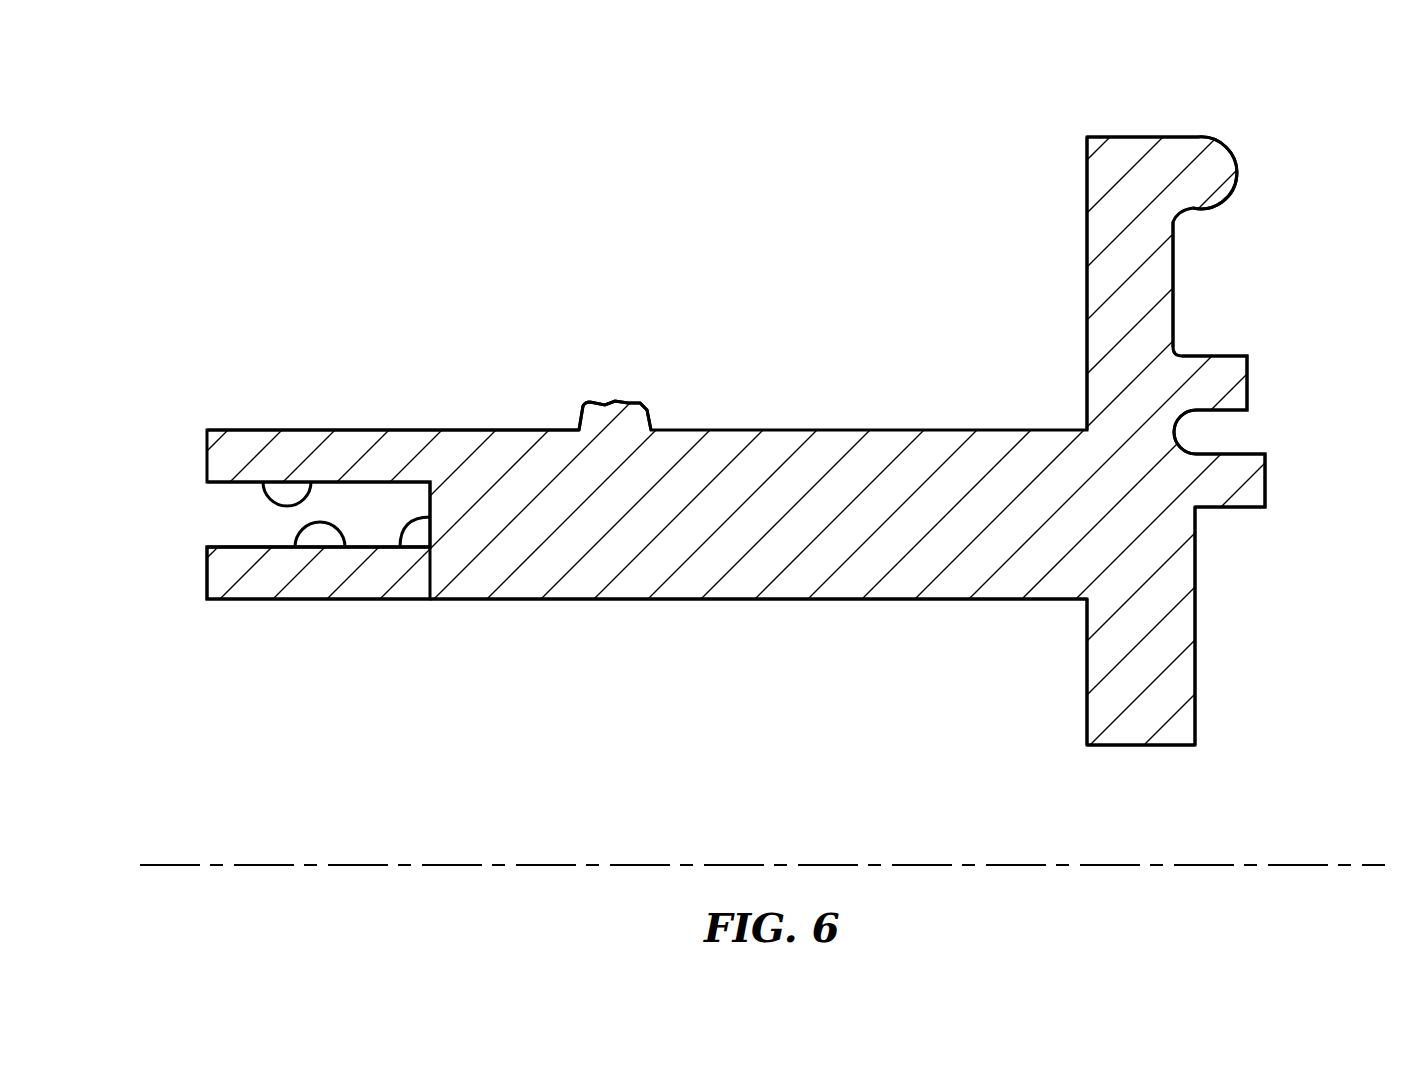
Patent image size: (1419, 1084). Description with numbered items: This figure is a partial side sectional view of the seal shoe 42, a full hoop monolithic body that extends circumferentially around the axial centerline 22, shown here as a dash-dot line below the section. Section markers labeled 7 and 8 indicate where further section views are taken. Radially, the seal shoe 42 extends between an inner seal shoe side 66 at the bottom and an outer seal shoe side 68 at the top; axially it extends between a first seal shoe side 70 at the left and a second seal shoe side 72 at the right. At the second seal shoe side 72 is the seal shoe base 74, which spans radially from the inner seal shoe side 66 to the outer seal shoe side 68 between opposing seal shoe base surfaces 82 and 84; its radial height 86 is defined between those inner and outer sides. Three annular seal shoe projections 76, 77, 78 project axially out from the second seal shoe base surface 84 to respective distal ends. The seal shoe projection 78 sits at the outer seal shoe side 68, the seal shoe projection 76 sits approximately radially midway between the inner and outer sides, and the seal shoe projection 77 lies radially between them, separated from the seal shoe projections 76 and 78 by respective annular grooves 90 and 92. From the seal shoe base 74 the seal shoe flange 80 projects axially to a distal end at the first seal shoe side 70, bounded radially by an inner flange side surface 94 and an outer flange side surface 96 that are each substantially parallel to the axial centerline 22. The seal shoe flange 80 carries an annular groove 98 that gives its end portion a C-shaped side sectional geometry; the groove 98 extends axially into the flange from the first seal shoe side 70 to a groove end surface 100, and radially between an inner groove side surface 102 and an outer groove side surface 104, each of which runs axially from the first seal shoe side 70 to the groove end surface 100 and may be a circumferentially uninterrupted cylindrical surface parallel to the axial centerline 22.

The seal shoe 42 is at (558, 213).
The outer seal shoe side 68 is at (1107, 137).
The seal shoe projection 78 is at (1240, 160).
The seal shoe base 74 is at (1086, 303).
The groove 92 is at (1206, 295).
The seal shoe projection 77 is at (1250, 378).
The groove 90 is at (1220, 435).
The seal shoe projection 76 is at (1269, 466).
The second seal shoe side 72 is at (1265, 493).
The second seal shoe base surface 84 is at (1197, 668).
The seal shoe base surface 82 is at (1085, 663).
The inner seal shoe side 66 is at (1103, 745).
The radial height 86 is at (1220, 137).
The seal shoe flange 80 is at (743, 427).
The outer flange side surface 96 is at (489, 430).
The inner flange side surface 94 is at (505, 600).
The first seal shoe side 70 is at (207, 572).
The groove 98 is at (228, 512).
The outer groove side surface 104 is at (312, 482).
The inner groove side surface 102 is at (305, 525).
The groove end surface 100 is at (408, 518).
The axial centerline 22 is at (150, 865).
The section line 7- 7 is at (311, 318).
The section line 8- 8 is at (1274, 115).